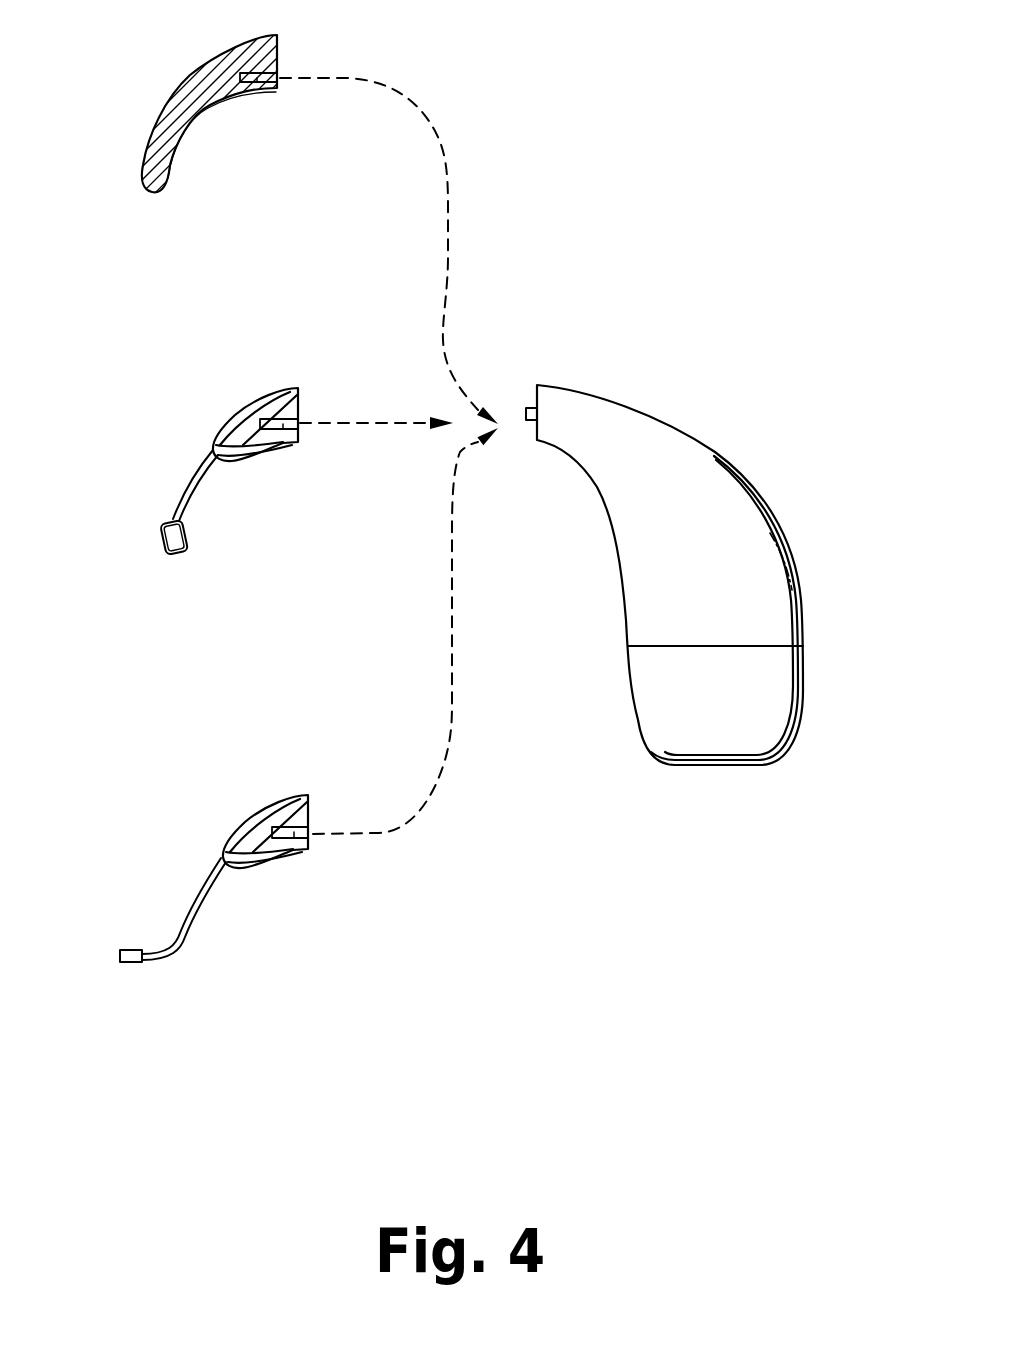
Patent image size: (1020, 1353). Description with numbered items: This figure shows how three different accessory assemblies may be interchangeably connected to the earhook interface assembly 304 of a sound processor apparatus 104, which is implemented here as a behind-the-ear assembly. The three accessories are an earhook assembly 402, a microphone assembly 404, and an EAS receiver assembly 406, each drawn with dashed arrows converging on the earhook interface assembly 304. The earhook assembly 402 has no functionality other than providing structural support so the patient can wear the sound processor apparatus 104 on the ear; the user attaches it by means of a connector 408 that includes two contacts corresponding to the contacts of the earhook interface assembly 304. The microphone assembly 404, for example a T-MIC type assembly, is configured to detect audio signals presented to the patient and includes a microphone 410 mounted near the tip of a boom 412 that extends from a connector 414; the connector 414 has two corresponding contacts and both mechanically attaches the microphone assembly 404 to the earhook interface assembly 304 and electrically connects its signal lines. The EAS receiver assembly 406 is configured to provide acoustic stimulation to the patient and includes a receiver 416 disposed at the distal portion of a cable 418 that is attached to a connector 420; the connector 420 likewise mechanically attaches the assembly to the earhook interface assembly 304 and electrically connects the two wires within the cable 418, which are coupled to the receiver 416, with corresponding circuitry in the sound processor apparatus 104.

The sound processor apparatus 104 is at (712, 448).
The earhook interface assembly 304 is at (531, 408).
The earhook assembly 402 is at (197, 63).
The connector 408 is at (258, 86).
The microphone assembly 404 is at (250, 400).
The connector 414 is at (287, 433).
The boom 412 is at (203, 472).
The microphone 410 is at (163, 547).
The EAS receiver assembly 406 is at (262, 806).
The connector 420 is at (300, 838).
The cable 418 is at (212, 878).
The receiver 416 is at (120, 962).